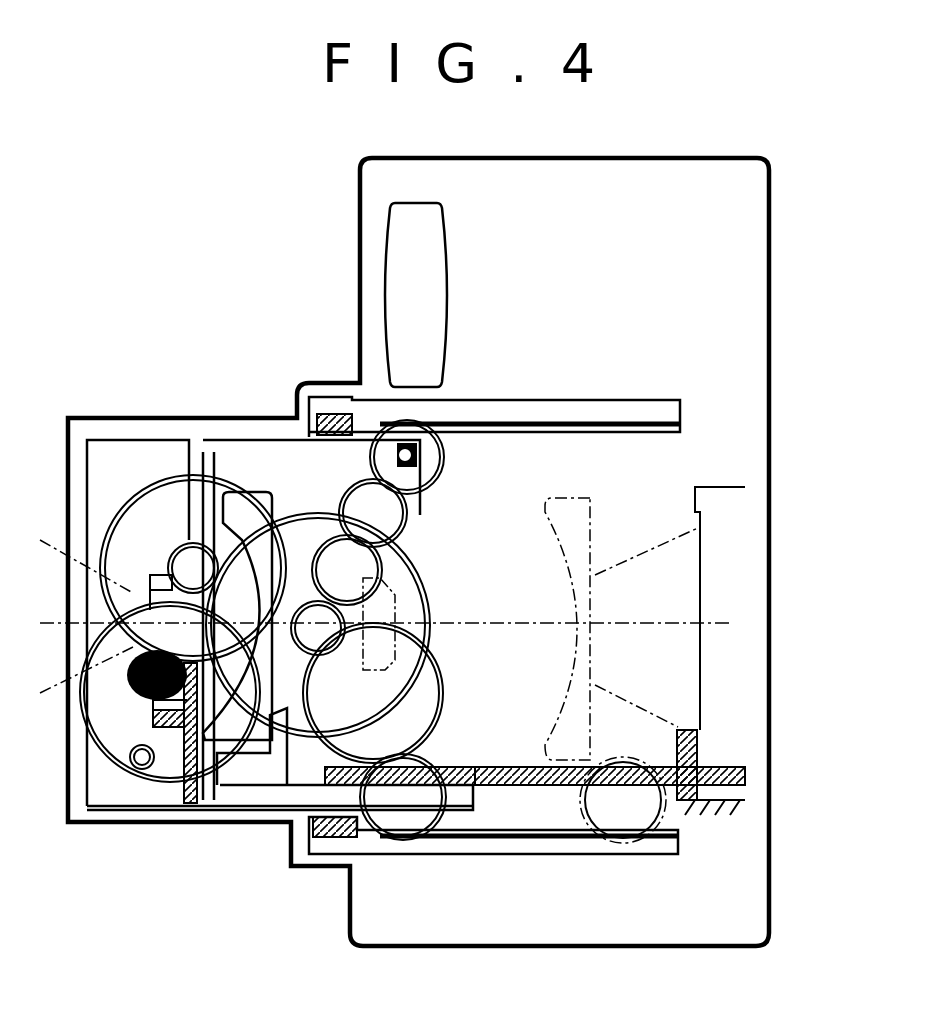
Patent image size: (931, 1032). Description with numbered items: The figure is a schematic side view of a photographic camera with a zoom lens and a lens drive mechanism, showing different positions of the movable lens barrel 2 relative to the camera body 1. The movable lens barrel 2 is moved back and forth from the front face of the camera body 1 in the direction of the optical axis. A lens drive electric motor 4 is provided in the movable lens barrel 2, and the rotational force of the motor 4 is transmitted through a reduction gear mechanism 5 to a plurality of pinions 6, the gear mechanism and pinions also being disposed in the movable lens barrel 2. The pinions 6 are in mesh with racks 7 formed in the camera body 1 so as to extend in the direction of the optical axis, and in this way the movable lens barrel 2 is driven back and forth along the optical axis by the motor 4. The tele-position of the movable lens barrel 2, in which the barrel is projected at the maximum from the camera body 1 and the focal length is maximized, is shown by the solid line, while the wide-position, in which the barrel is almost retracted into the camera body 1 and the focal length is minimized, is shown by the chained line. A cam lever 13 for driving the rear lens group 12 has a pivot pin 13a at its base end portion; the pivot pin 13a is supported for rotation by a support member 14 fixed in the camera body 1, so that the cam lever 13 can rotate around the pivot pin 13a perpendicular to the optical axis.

The camera body 1 is at (772, 228).
The movable lens barrel 2 is at (160, 812).
The lens drive electric motor 4 is at (118, 782).
The reduction gear mechanism 5 is at (307, 478).
The pinions 6 is at (444, 459).
The racks 7 is at (538, 432).
The rear lens group 12 is at (272, 490).
The cam lever 13 is at (290, 795).
The pivot pin 13a is at (452, 760).
The support member 14 is at (515, 765).